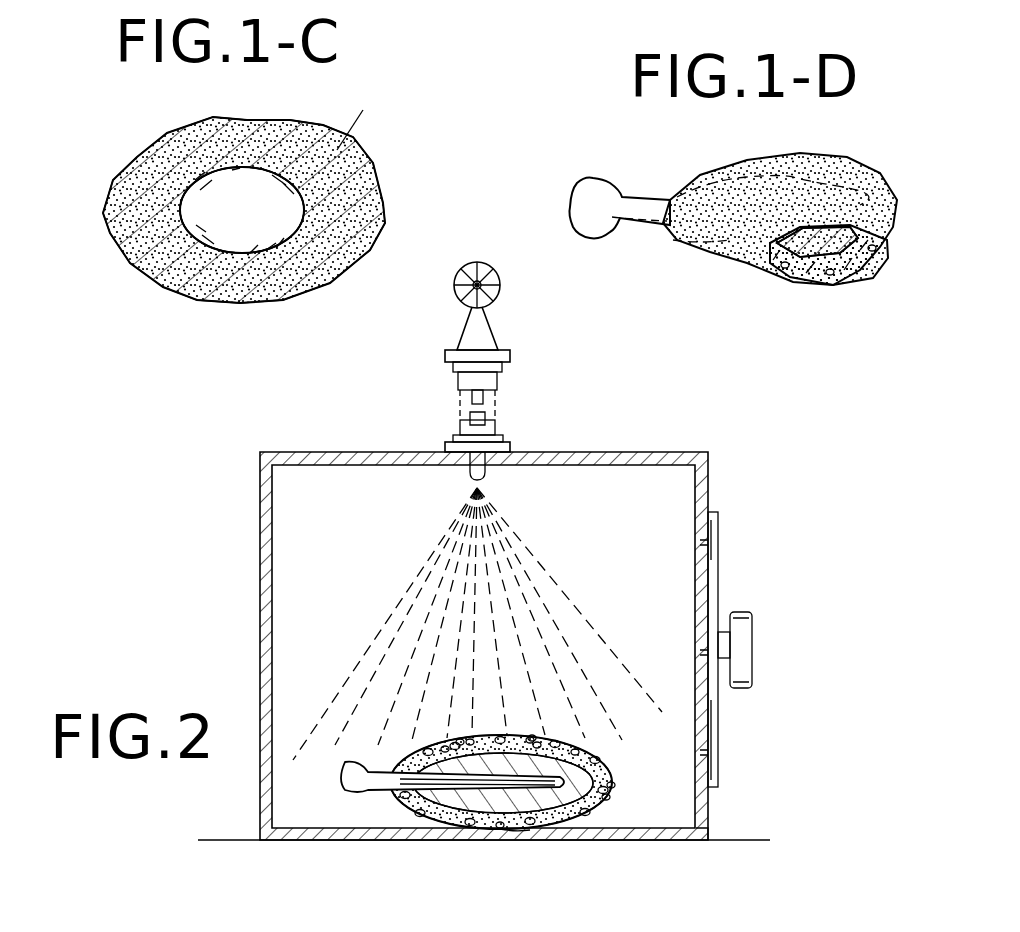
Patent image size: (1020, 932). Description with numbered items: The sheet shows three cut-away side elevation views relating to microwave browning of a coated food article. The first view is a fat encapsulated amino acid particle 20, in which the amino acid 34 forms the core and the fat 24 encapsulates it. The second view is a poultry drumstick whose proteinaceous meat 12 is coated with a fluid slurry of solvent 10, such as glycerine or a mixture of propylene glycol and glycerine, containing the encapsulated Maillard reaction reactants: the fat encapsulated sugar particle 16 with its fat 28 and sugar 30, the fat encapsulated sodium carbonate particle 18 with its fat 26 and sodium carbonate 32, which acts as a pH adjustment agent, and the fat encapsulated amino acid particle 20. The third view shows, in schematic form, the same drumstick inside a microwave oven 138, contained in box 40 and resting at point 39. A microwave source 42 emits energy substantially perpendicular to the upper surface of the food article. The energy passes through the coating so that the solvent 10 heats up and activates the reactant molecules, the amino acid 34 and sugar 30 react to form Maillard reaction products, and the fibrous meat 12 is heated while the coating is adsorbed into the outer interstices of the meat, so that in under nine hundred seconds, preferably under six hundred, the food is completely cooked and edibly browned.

In FIG. 1D, the solvent composition 10 is at (740, 226).
In FIG. 2, the solvent composition 10 is at (488, 765).
In FIG. 1D, the proteinaceous foodstuff 12 is at (807, 233).
In FIG. 2, the proteinaceous foodstuff 12 is at (477, 805).
In FIG. 1D, the fat encapsulated sugar particle 16 is at (828, 282).
In FIG. 2, the fat encapsulated sugar particle 16 is at (423, 753).
In FIG. 1D, the fat encapsulated sodium carbonate particle 18 is at (790, 278).
In FIG. 2, the fat encapsulated sodium carbonate particle 18 is at (520, 732).
In FIG. 1C, the fat encapsulated amino acid particle 20 is at (269, 222).
In FIG. 1D, the fat encapsulated amino acid particle 20 is at (829, 284).
In FIG. 2, the fat encapsulated amino acid particle 20 is at (505, 767).
In FIG. 1C, the fat encapsulating the amino acid 24 is at (160, 142).
In FIG. 2, the fat encapsulating the amino acid 24 is at (608, 797).
In FIG. 2, the fat encapsulating the sodium carbonate 26 is at (537, 743).
In FIG. 2, the fat encapsulating the sugar 28 is at (443, 747).
In FIG. 2, the sugar 30 is at (458, 740).
In FIG. 2, the sodium carbonate 32 is at (530, 735).
In FIG. 1C, the amino acid 34 is at (323, 203).
In FIG. 2, the amino acid 34 is at (613, 785).
In FIG. 2, the resting point 39 is at (527, 833).
In FIG. 2, the box 40 is at (262, 553).
In FIG. 2, the microwave source 42 is at (452, 400).
In FIG. 2, the microwave oven 138 is at (712, 828).